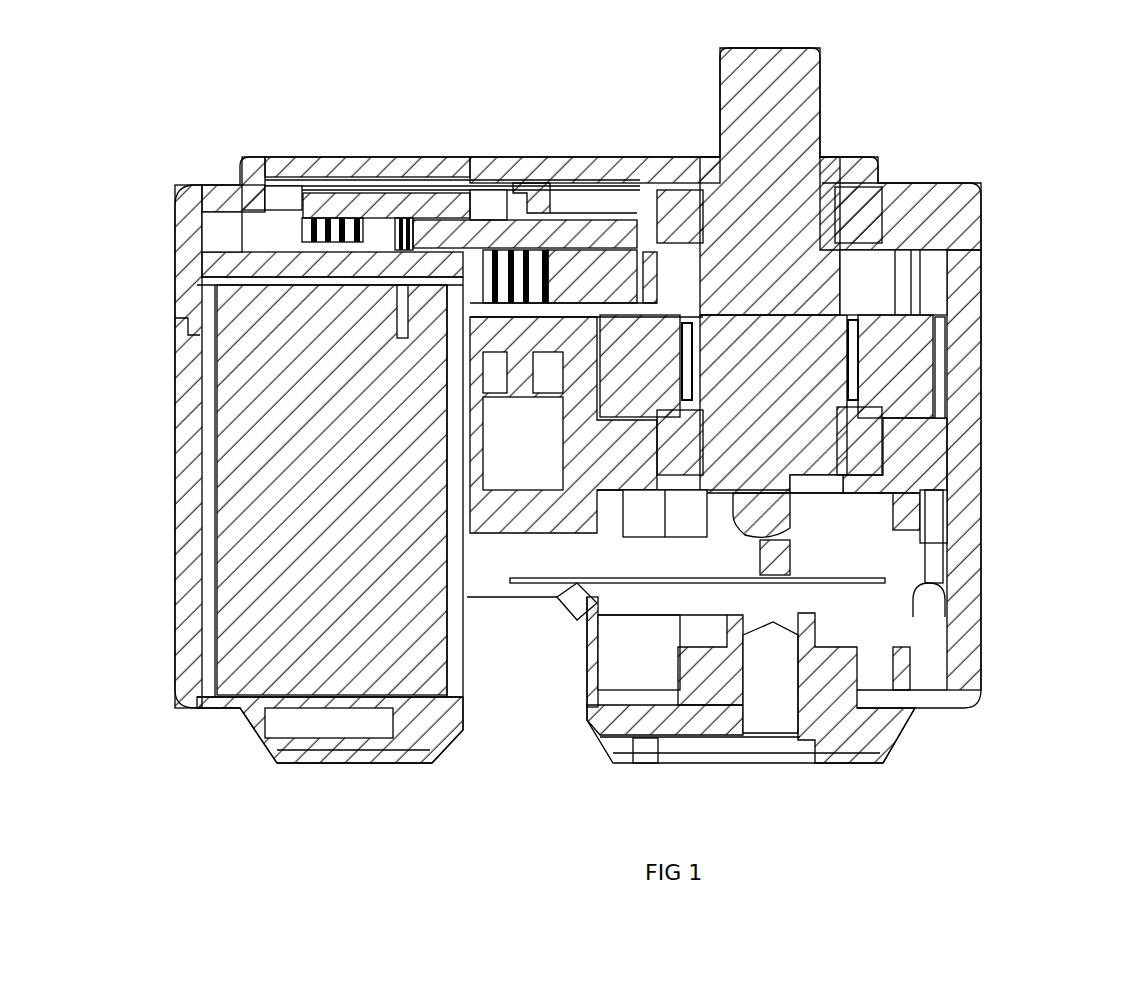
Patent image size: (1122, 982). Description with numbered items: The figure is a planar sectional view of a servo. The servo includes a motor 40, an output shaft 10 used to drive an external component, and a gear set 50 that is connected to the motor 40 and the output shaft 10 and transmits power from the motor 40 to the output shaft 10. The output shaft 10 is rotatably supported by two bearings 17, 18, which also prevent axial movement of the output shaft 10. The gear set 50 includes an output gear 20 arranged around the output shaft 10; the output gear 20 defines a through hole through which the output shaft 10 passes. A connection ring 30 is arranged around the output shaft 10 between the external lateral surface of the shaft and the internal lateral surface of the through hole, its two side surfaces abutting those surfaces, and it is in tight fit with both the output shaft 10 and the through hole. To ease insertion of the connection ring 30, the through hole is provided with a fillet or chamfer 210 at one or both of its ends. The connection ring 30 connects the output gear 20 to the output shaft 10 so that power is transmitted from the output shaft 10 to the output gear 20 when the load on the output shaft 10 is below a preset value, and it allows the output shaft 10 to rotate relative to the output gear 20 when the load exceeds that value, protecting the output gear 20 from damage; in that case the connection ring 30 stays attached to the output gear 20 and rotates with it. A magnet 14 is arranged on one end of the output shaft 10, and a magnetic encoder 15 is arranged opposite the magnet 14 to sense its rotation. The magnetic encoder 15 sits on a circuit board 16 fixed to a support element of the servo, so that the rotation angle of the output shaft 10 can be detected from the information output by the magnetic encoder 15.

The output shaft 10 is at (775, 250).
The output gear 20 is at (640, 350).
The gear set 50 is at (488, 252).
The motor 40 is at (327, 440).
The bearing 17 is at (950, 244).
The fillet or chamfer 210 is at (858, 318).
The connection ring 30 is at (858, 345).
The bearing 18 is at (858, 447).
The magnet 14 is at (757, 532).
The magnetic encoder 15 is at (772, 568).
The circuit board 16 is at (550, 578).